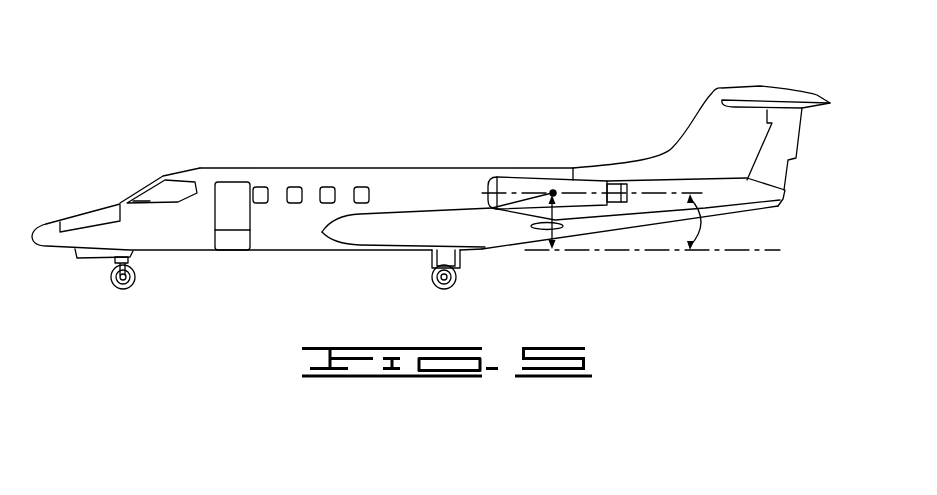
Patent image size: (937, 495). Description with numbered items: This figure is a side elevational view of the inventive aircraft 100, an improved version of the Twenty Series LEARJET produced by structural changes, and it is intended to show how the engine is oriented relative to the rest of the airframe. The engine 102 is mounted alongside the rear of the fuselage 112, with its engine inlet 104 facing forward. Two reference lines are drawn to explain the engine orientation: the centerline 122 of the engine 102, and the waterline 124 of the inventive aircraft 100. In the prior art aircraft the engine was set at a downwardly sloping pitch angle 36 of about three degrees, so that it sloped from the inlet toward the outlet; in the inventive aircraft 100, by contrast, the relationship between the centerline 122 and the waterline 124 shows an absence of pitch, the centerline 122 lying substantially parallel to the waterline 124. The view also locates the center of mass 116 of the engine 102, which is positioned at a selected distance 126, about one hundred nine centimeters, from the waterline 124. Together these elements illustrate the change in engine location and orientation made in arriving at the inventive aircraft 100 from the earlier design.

The inventive aircraft 100 is at (198, 41).
The fuselage 112 is at (358, 161).
The engine 102 is at (542, 167).
The engine inlet 104 is at (479, 187).
The center of mass 116 is at (492, 208).
The centerline 122 is at (672, 193).
The waterline 124 is at (645, 252).
The selected distance 126 is at (532, 228).
The pitch angle 36 is at (700, 223).